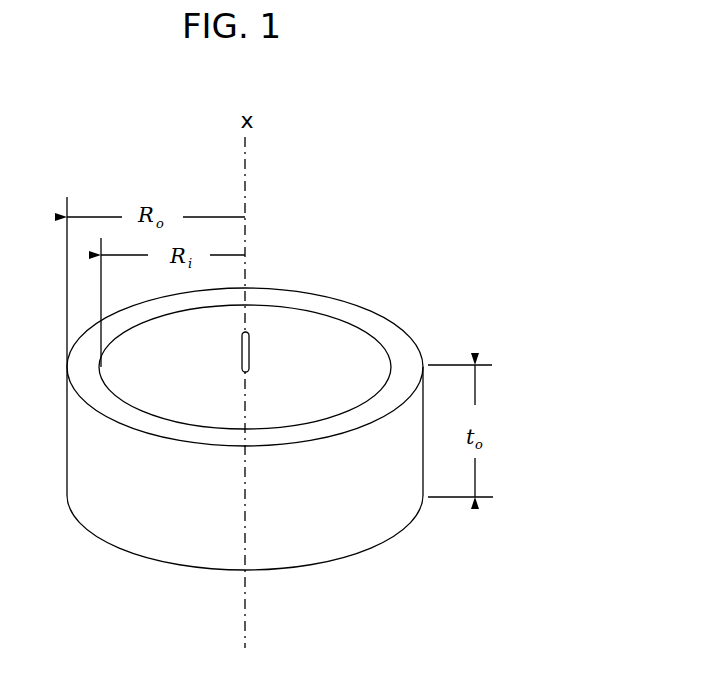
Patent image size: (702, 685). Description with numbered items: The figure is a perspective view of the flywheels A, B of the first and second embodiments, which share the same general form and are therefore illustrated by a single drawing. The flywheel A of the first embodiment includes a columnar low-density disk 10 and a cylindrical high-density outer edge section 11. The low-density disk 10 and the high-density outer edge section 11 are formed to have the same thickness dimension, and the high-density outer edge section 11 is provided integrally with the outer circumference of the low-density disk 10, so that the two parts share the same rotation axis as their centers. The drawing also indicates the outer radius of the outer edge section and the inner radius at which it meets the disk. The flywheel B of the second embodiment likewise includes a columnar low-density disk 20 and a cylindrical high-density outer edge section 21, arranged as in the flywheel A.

The low-density disk 10 is at (287, 359).
The low-density disk 20 is at (342, 357).
The high-density outer edge section 11 is at (293, 479).
The high-density outer edge section 21 is at (352, 527).
The flywheel A is at (308, 394).
The flywheel B is at (308, 394).